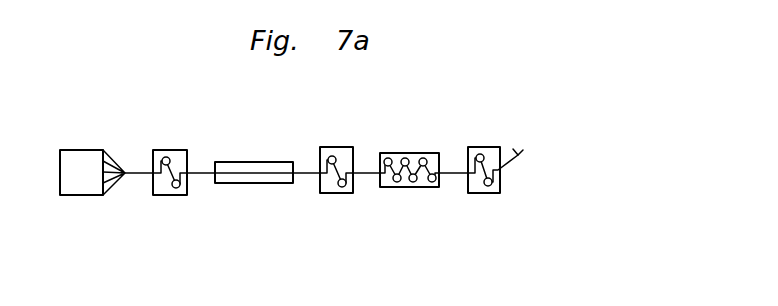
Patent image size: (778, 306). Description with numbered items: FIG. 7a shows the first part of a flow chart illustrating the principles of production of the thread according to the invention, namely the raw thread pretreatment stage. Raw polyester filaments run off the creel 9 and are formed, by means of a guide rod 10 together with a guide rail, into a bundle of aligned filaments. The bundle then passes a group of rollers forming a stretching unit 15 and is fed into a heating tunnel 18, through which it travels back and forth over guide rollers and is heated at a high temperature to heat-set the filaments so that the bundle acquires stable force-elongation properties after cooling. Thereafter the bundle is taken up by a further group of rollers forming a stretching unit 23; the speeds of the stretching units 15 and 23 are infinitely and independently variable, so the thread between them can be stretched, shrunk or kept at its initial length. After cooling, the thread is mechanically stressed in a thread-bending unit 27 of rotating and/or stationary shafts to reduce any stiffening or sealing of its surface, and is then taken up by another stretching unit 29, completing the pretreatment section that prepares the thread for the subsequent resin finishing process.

The creel 9 is at (76, 185).
The guide rod 10 is at (125, 173).
The stretching unit 15 is at (166, 190).
The heating tunnel 18 is at (246, 178).
The stretching unit 23 is at (333, 188).
The thread-bending unit 27 is at (403, 183).
The stretching unit 29 is at (481, 188).